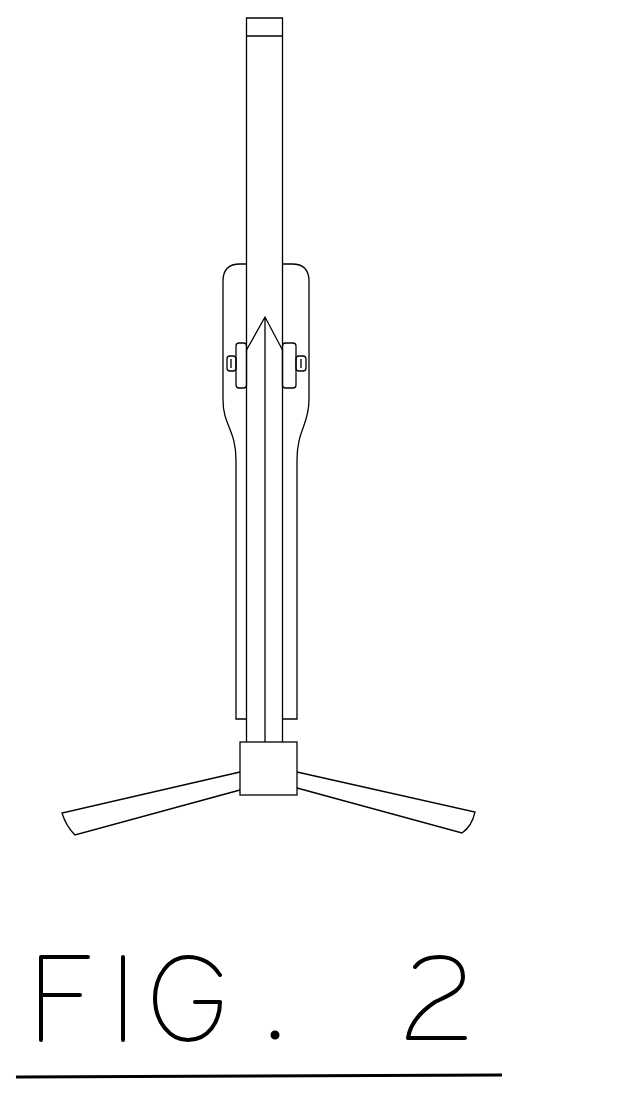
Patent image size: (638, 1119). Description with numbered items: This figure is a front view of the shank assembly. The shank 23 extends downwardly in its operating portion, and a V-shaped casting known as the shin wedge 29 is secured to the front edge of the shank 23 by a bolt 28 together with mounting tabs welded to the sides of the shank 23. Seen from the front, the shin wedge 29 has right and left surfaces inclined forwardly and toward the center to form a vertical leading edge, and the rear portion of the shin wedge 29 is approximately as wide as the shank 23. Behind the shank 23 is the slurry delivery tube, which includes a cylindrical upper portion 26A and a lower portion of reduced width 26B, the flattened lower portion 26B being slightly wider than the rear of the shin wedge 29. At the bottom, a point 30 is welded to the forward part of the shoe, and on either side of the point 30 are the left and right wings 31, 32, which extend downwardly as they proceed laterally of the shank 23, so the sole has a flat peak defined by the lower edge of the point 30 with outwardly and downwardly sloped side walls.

The shank 23 is at (303, 133).
The cylindrical upper portion 26A is at (329, 313).
The lower portion of reduced width 26B is at (318, 575).
The bolt 28 is at (331, 366).
The shin wedge 29 is at (305, 506).
The point 30 is at (266, 819).
The left wing 31 is at (408, 774).
The right wing 32 is at (144, 770).